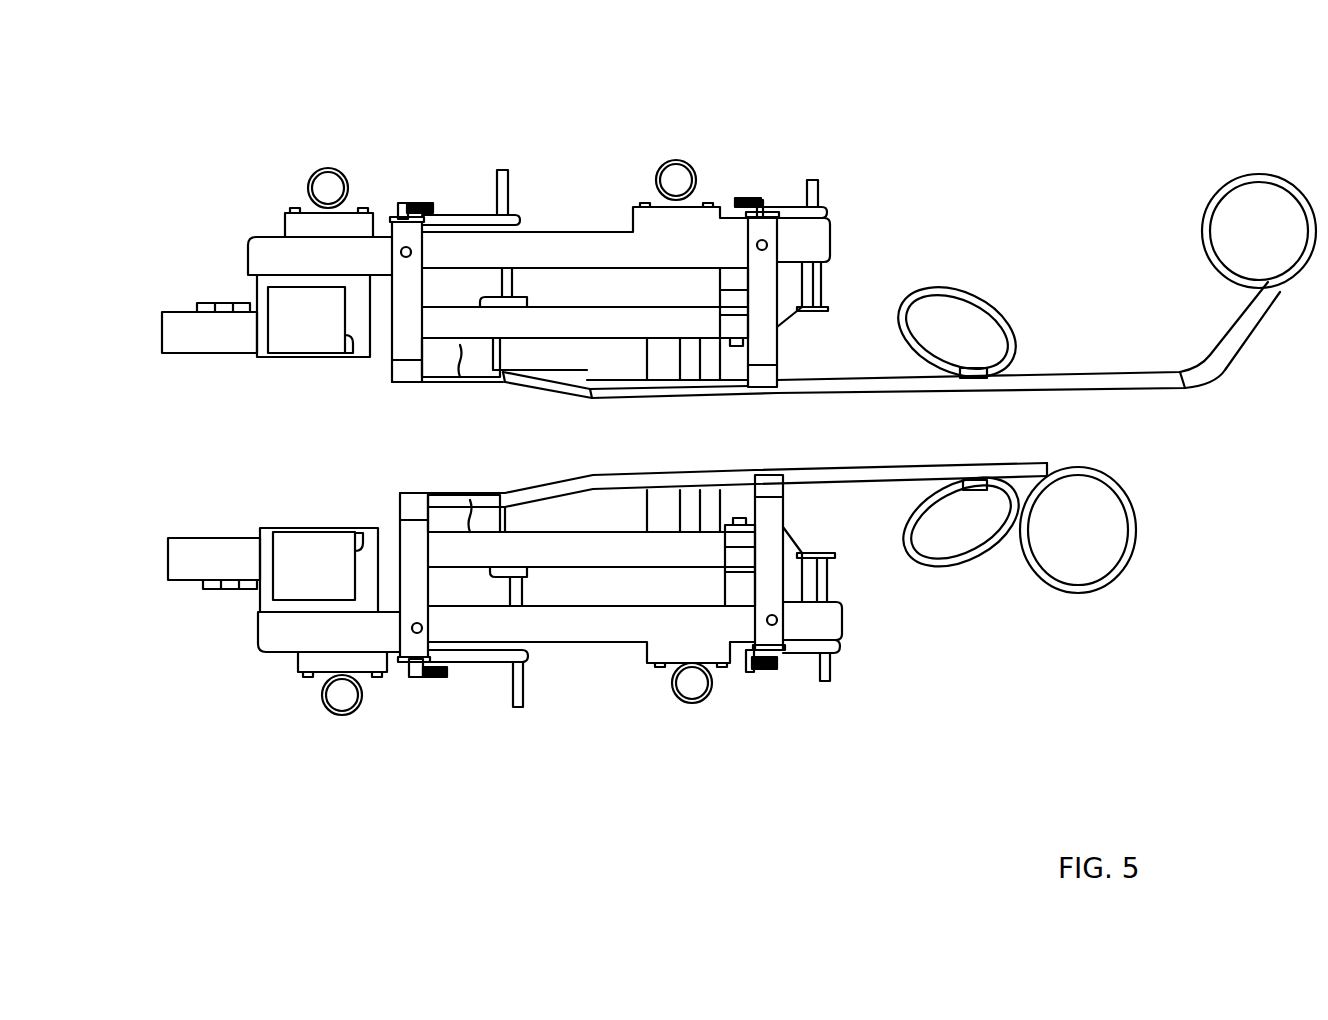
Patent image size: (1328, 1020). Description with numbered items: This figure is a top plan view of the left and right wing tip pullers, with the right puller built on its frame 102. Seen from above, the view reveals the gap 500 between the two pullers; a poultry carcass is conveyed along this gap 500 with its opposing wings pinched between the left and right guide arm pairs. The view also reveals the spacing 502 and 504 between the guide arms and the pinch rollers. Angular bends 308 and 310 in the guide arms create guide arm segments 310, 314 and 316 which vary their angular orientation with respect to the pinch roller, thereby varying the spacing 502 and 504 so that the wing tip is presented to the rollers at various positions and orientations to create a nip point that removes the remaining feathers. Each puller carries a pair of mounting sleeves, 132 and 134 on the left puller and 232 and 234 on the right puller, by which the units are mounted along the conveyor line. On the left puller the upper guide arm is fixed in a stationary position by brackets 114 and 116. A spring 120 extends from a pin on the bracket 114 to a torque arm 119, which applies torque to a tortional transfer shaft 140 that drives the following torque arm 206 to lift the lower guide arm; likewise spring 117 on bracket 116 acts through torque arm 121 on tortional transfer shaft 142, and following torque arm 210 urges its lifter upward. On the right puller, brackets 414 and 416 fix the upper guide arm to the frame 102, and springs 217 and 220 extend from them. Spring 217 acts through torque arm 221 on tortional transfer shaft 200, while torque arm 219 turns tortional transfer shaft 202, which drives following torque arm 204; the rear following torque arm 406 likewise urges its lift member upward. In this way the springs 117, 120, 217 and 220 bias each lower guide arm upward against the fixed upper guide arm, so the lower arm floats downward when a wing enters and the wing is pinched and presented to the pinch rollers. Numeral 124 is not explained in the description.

The frame 102 is at (618, 622).
The bracket 114 is at (768, 285).
The mounting bracket 116 is at (410, 300).
The spring 117 is at (414, 203).
The torque arm 119 is at (795, 207).
The spring 120 is at (750, 198).
The torque arm 121 is at (466, 215).
The bracket 124 is at (708, 545).
The mounting sleeve 132 is at (312, 170).
The mounting sleeve 134 is at (680, 163).
The tortional transfer shaft 140 is at (816, 185).
The tortional transfer shaft 142 is at (504, 172).
The tortional transfer shaft 200 is at (521, 707).
The tortional transfer shaft 202 is at (832, 683).
The following torque arm 204 is at (778, 574).
The following torque arm 206 is at (797, 318).
The following torque arm 210 is at (522, 300).
The spring member 217 is at (424, 680).
The torque arm 219 is at (806, 670).
The spring 220 is at (766, 678).
The torque arm 221 is at (483, 665).
The sleeve mount 232 is at (327, 712).
The sleeve mount 234 is at (706, 703).
The angular bend 308 is at (590, 396).
The angular bend 310 is at (500, 382).
The guide arm segment 314 is at (527, 393).
The guide arm segment 316 is at (438, 380).
The rear following torque arm 406 is at (512, 574).
The bracket 414 is at (834, 558).
The bracket 416 is at (411, 600).
The gap 500 is at (1017, 443).
The spacing 502 is at (634, 384).
The spacing 504 is at (624, 518).